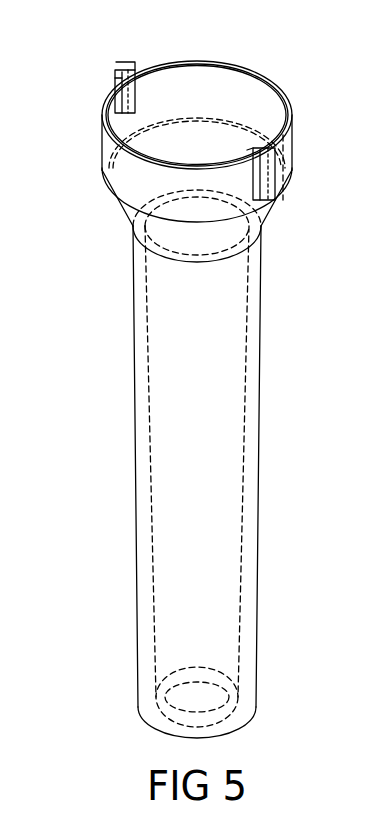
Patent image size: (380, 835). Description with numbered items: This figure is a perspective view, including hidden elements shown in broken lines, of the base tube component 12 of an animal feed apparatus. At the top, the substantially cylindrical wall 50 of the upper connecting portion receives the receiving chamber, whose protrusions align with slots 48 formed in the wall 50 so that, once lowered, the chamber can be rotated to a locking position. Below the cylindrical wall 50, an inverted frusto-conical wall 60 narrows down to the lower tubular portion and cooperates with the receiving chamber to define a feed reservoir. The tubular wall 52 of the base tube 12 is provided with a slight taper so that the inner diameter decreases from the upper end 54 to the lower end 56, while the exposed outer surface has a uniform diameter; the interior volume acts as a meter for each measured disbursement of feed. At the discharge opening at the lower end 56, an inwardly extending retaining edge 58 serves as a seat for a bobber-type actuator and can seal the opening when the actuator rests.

The base tube component 12 is at (199, 389).
The slots 48 is at (283, 162).
The cylindrical wall 50 is at (118, 192).
The internal tubular wall 52 is at (250, 463).
The upper end 54 is at (110, 237).
The lower end 56 is at (118, 680).
The retaining edge 58 is at (222, 728).
The inverted frusto-conical wall 60 is at (268, 217).